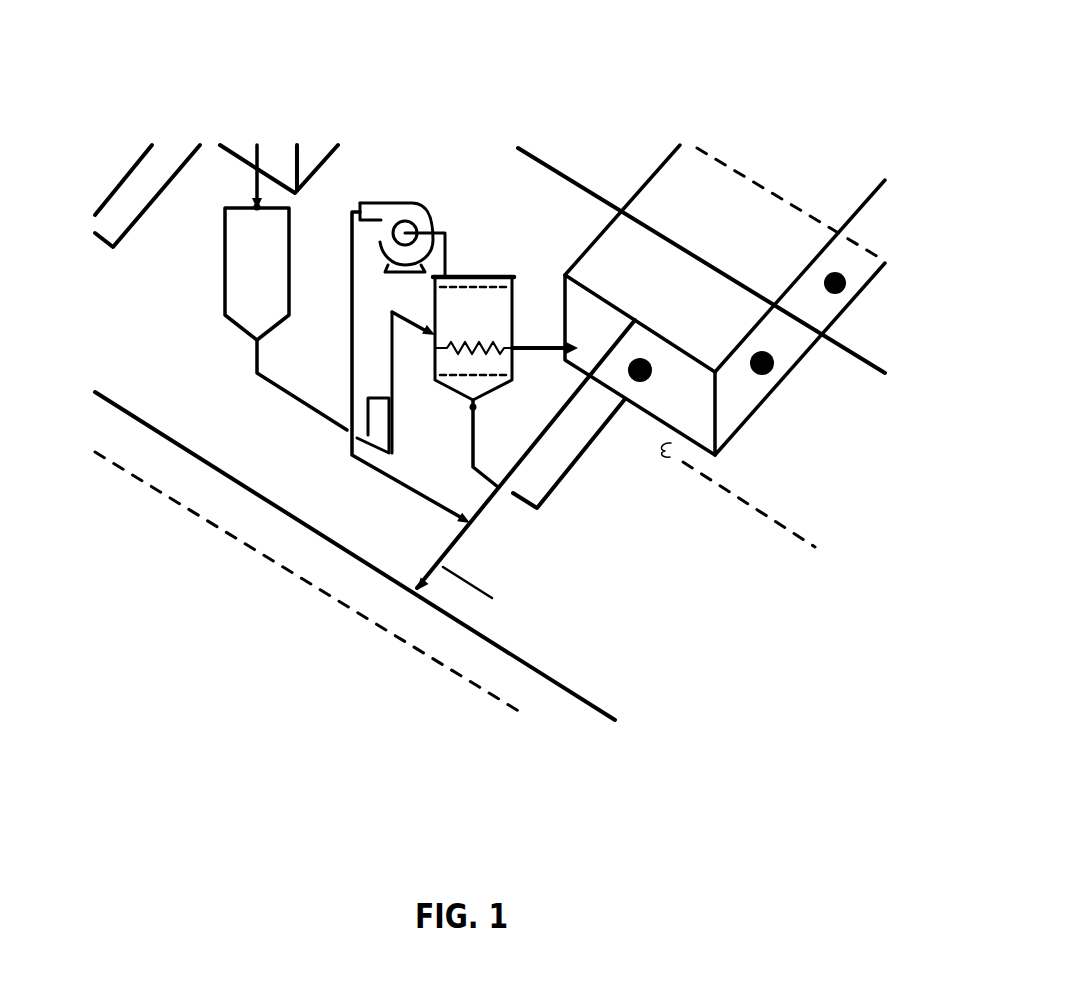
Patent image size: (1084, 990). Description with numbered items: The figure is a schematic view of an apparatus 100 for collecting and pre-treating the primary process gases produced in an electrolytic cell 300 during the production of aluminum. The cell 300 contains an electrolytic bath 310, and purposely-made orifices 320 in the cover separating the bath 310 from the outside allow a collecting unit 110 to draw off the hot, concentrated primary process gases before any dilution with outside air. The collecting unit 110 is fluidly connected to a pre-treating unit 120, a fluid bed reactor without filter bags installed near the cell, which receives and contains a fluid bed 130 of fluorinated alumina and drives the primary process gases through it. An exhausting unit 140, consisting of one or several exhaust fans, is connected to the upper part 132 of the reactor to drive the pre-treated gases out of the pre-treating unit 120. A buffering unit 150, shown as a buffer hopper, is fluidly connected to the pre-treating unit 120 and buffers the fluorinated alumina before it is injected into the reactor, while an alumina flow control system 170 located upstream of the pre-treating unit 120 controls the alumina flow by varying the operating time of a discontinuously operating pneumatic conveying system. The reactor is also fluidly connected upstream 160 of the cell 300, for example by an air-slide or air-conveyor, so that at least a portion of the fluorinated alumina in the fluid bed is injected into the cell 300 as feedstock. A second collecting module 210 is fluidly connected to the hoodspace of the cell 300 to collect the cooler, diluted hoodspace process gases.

The apparatus 100 is at (424, 152).
The collecting unit 110 is at (567, 475).
The pre-treating unit 120 is at (482, 255).
The fluid bed 130 is at (493, 305).
The upper part 132 is at (428, 289).
The exhausting unit 140 is at (387, 192).
The buffering unit 150 is at (212, 274).
The upstream connection 160 is at (550, 368).
The alumina flow control system 170 is at (399, 435).
The second collecting module 210 is at (641, 327).
The electrolytic cell 300 is at (640, 142).
The electrolytic bath 310 is at (685, 408).
The orifices 320 is at (752, 352).